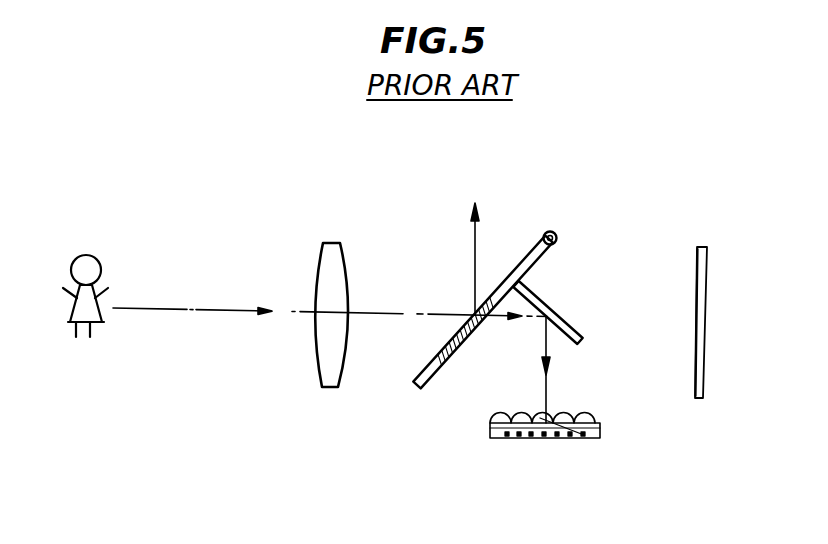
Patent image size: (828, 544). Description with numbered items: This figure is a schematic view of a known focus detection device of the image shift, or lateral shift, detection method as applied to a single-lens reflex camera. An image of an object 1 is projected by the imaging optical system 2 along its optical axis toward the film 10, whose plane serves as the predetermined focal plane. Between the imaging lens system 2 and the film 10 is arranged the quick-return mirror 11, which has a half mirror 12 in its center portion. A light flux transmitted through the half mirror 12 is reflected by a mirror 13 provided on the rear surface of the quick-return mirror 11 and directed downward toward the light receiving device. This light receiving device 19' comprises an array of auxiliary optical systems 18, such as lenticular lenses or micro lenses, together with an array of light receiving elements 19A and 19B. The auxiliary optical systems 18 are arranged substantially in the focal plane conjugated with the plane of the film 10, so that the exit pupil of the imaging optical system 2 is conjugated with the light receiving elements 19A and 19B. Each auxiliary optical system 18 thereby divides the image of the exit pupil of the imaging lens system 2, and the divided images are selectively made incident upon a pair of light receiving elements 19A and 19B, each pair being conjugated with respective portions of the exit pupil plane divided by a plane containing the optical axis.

The object 1 is at (100, 258).
The imaging optical system 2 is at (337, 243).
The film 10 is at (706, 333).
The quick-return mirror 11 is at (530, 253).
The half mirror 12 is at (442, 346).
The mirror 13 is at (577, 326).
The auxiliary optical systems 18 is at (553, 421).
The focus detecting sensor array 19' is at (577, 440).
The light receiving elements 19A is at (571, 442).
The light receiving elements 19B is at (546, 419).